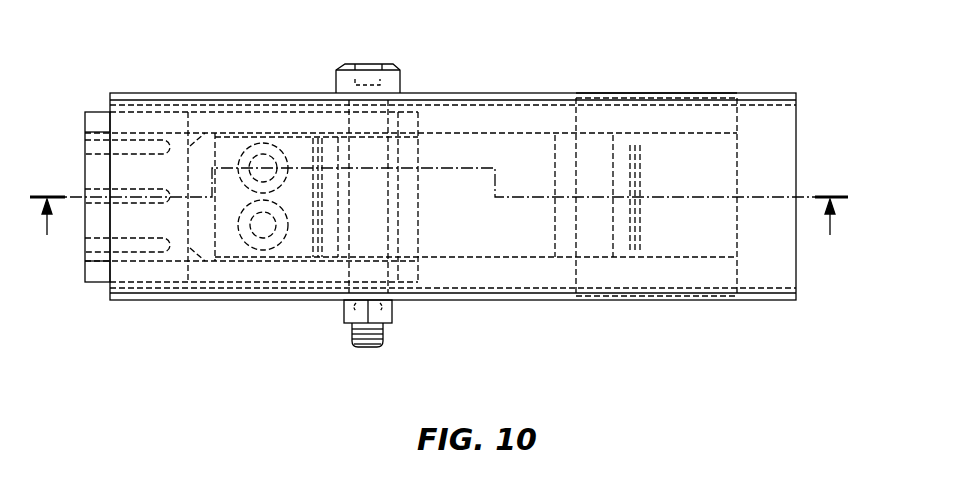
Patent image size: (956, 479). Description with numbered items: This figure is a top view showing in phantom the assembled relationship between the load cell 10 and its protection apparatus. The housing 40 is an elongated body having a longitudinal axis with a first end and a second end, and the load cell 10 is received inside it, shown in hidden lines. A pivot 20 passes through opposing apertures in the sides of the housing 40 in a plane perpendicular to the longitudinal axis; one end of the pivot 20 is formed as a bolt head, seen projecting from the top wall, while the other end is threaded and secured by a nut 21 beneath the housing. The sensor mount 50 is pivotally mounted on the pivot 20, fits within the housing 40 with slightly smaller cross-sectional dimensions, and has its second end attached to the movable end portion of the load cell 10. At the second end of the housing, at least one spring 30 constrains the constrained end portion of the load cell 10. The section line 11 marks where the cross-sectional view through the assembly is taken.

The load cell 10 is at (477, 160).
The section line 11- 11 is at (439, 229).
The pivot 20 is at (338, 68).
The nut 21 is at (344, 323).
The spring 30 is at (630, 273).
The housing 40 is at (648, 94).
The sensor mount 50 is at (95, 172).